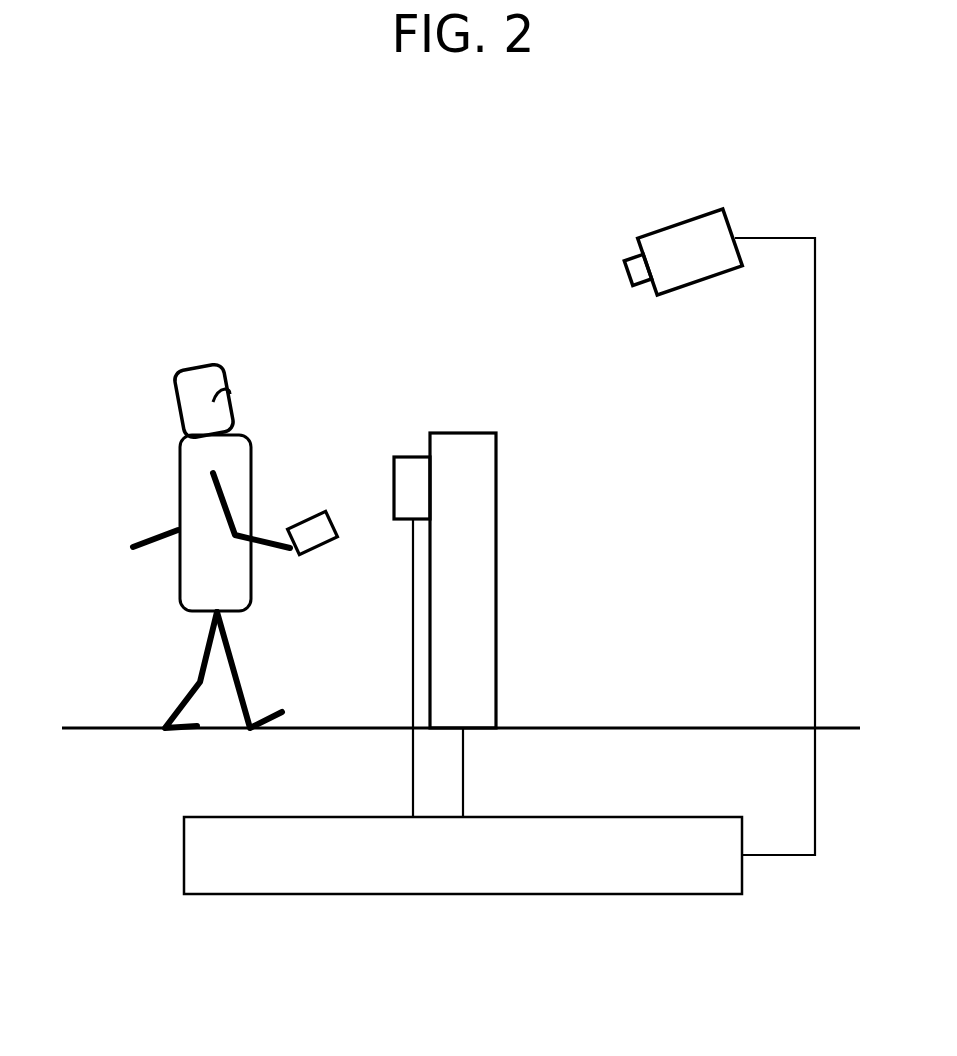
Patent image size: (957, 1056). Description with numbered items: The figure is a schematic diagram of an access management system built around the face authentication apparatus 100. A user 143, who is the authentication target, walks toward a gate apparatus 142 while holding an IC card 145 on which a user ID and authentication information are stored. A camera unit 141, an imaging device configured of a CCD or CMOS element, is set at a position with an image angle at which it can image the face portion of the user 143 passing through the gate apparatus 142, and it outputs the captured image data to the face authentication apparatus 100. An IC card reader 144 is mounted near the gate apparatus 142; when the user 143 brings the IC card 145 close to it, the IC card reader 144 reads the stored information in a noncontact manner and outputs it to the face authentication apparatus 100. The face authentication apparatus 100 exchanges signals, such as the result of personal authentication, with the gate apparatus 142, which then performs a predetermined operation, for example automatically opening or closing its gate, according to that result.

The face authentication apparatus 100 is at (688, 817).
The camera unit 141 is at (680, 222).
The gate apparatus 142 is at (496, 475).
The user 143 is at (208, 361).
The IC card reader 144 is at (407, 456).
The IC card 145 is at (305, 512).